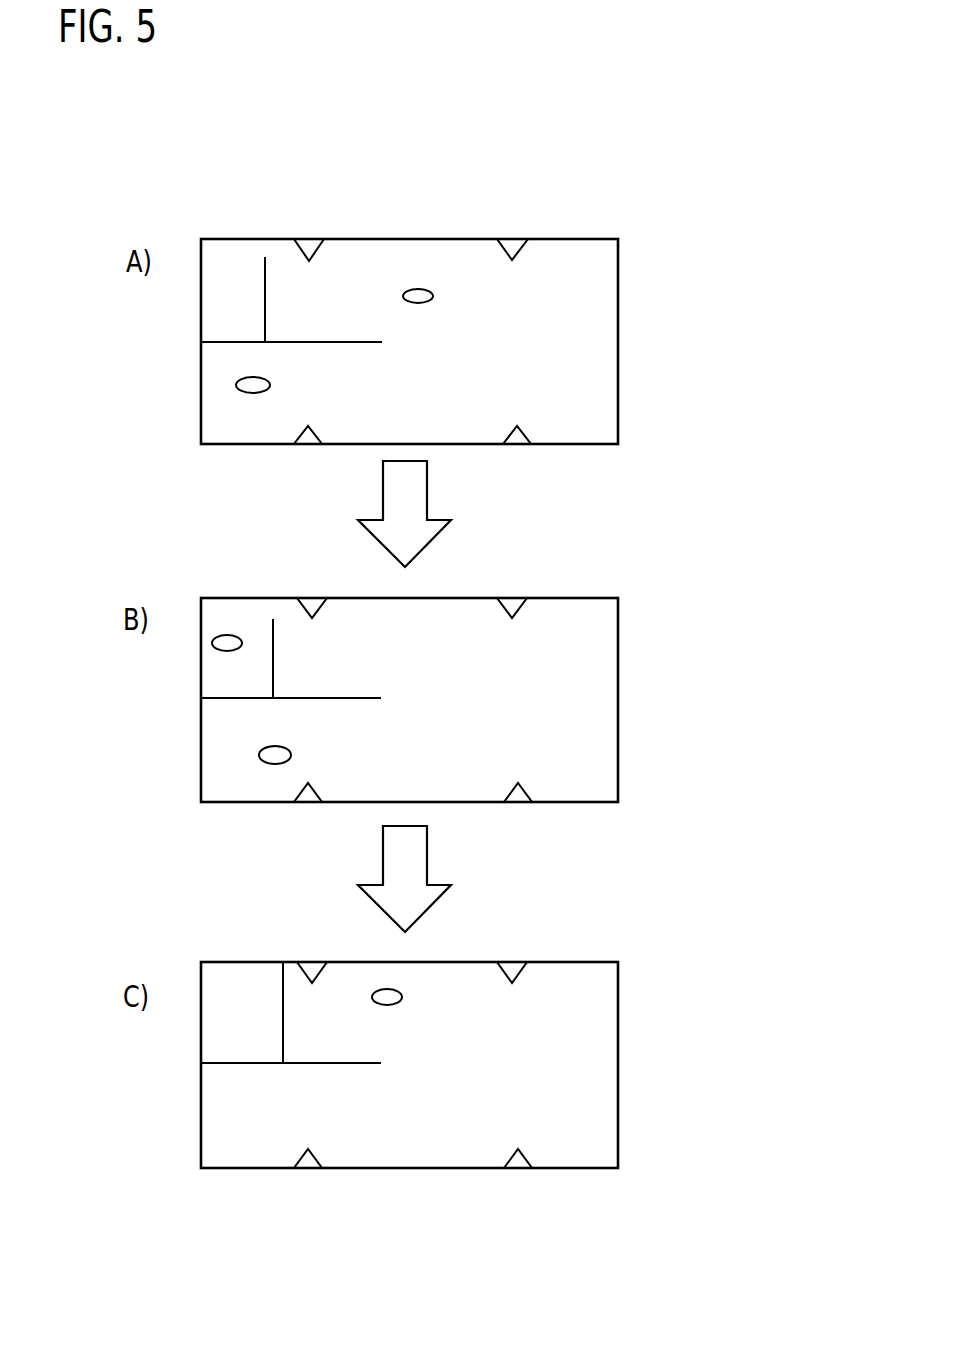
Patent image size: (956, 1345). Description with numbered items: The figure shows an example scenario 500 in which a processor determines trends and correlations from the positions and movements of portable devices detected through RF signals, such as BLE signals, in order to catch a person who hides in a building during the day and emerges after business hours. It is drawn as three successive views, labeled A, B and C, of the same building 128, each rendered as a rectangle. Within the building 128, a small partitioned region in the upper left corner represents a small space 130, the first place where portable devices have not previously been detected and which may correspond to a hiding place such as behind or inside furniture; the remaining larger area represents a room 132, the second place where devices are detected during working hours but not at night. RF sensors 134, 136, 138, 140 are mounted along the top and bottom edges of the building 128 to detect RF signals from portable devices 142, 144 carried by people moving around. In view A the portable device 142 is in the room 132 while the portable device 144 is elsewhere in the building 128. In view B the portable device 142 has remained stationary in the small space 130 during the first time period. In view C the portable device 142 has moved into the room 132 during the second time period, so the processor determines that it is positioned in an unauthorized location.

The example scenario 500 is at (695, 62).
The building 128 is at (567, 239).
The small space 130 is at (238, 252).
The room 132 is at (597, 291).
The RF sensor 134 is at (310, 238).
The RF sensor 136 is at (513, 238).
The RF sensor 138 is at (305, 446).
The RF sensor 140 is at (512, 446).
The portable device 142 is at (433, 292).
The portable device 144 is at (268, 381).